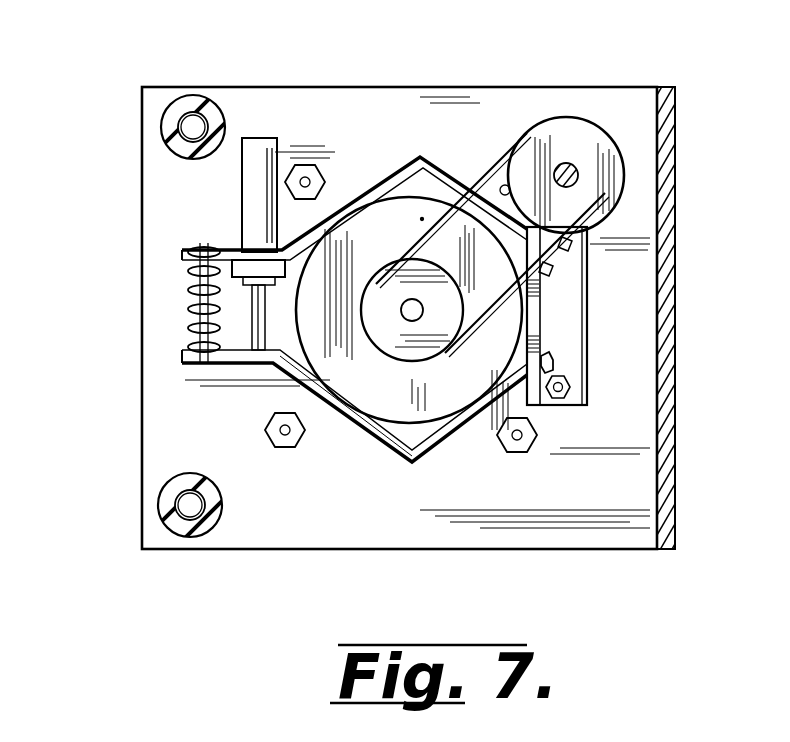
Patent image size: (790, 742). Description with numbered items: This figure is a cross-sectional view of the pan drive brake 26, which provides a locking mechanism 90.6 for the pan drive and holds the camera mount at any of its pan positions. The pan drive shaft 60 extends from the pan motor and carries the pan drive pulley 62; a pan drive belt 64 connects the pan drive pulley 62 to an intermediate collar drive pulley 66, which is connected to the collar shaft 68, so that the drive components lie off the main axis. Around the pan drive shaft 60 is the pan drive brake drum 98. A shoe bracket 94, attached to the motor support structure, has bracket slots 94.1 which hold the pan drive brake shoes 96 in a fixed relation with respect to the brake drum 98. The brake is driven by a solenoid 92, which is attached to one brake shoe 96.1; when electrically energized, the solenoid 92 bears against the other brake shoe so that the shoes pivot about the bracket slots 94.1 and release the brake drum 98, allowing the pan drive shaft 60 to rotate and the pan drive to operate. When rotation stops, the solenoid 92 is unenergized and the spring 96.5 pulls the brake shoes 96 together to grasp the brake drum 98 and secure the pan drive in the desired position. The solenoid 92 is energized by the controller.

The pan drive brake 26 is at (233, 360).
The solenoid 92 is at (264, 138).
The locking mechanism 90.6 is at (380, 180).
The pan drive brake shoes 96 is at (395, 450).
The brake shoe 96.1 is at (231, 250).
The spring 96.5 is at (187, 328).
The pan drive shaft 60 is at (398, 316).
The pan drive pulley 62 is at (405, 337).
The pan drive brake drum 98 is at (422, 218).
The pan drive belt 64 is at (488, 165).
The collar drive pulley 66 is at (575, 133).
The collar shaft 68 is at (578, 168).
The shoe bracket 94 is at (543, 303).
The bracket slots 94.1 is at (545, 363).